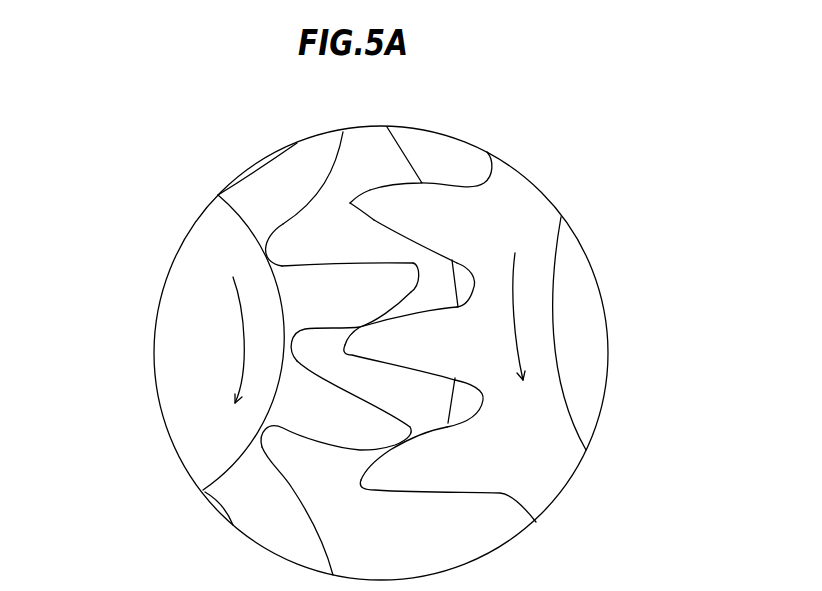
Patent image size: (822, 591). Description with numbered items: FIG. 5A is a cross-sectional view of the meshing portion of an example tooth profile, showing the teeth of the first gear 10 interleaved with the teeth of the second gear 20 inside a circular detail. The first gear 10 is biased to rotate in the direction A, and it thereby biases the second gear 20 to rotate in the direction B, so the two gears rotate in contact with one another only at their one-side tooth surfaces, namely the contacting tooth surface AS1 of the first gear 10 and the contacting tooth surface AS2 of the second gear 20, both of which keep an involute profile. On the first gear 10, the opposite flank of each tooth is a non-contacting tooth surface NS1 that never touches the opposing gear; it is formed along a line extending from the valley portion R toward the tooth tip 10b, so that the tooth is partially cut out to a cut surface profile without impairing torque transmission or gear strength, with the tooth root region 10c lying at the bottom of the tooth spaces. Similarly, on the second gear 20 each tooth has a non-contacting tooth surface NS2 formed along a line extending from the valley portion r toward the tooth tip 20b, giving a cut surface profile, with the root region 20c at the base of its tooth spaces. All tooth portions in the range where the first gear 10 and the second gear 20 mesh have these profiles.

The first gear 10 is at (217, 217).
The second gear 20 is at (557, 270).
The tooth tip 10b is at (414, 266).
The tooth root of first gear 10c is at (272, 267).
The tooth tip 20b is at (351, 204).
The tooth root of second gear 20c is at (463, 269).
The contacting tooth surface AS1 is at (322, 195).
The non-contacting tooth surface NS1 is at (333, 263).
The contacting tooth surface AS2 is at (427, 187).
The non-contacting tooth surface NS2 is at (403, 239).
The valley portion R is at (270, 255).
The valley portion r is at (468, 272).
The direction A is at (245, 362).
The direction B is at (517, 337).